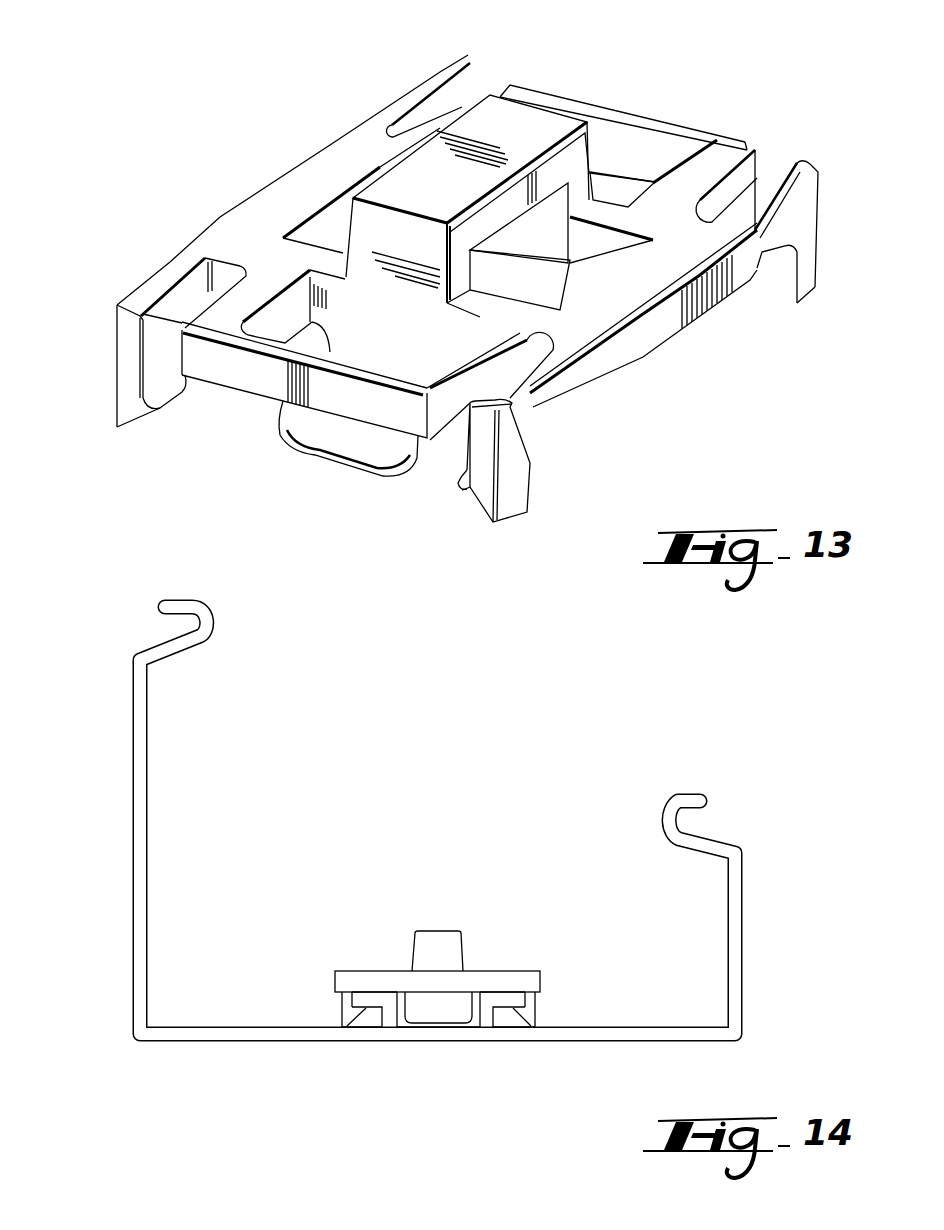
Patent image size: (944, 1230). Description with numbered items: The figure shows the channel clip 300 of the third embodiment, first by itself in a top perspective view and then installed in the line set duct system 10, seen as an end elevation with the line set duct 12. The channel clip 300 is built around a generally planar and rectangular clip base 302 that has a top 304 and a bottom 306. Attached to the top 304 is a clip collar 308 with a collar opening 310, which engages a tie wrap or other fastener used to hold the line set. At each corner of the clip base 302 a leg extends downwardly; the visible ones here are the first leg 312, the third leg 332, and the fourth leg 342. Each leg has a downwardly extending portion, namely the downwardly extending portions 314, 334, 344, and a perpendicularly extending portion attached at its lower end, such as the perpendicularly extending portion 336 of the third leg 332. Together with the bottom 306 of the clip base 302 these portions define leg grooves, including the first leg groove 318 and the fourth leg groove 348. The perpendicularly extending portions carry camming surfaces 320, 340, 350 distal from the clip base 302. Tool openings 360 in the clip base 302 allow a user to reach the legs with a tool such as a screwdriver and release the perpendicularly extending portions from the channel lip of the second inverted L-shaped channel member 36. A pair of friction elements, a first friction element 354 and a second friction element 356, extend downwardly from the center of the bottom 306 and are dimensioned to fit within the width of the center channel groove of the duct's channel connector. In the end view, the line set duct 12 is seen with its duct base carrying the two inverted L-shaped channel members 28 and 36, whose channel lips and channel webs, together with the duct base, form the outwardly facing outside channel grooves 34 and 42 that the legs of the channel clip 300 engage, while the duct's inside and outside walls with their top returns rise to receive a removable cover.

In FIG. 14, the line set duct system 10 is at (572, 740).
In FIG. 14, the line set duct 12 is at (148, 783).
In FIG. 14, the first inverted L-shaped channel member 28 is at (387, 1000).
In FIG. 14, the second inverted L-shaped channel member 36 is at (487, 1002).
In FIG. 14, the outside channel groove 34 is at (372, 1024).
In FIG. 14, the outside channel groove 42 is at (502, 1023).
In FIG. 13, the channel clip 300 is at (632, 47).
In FIG. 14, the channel clip 300 is at (345, 970).
In FIG. 13, the clip base 302 is at (333, 133).
In FIG. 14, the clip base 302 is at (337, 983).
In FIG. 13, the top 304 is at (302, 193).
In FIG. 13, the bottom 306 is at (673, 338).
In FIG. 13, the clip collar 308 is at (521, 122).
In FIG. 14, the clip collar 308 is at (435, 927).
In FIG. 13, the collar opening 310 is at (578, 200).
In FIG. 13, the first leg 312 is at (120, 425).
In FIG. 14, the first leg 312 is at (342, 1002).
In FIG. 13, the downwardly extending portion 314 is at (115, 378).
In FIG. 13, the first leg groove 318 is at (180, 390).
In FIG. 13, the camming surface 320 is at (147, 405).
In FIG. 14, the camming surface 320 is at (357, 1025).
In FIG. 13, the third leg 332 is at (817, 288).
In FIG. 13, the downwardly extending portion 334 is at (822, 205).
In FIG. 13, the perpendicularly extending portion 336 is at (793, 303).
In FIG. 13, the camming surface 340 is at (760, 280).
In FIG. 13, the fourth leg 342 is at (502, 512).
In FIG. 14, the fourth leg 342 is at (540, 1000).
In FIG. 13, the downwardly extending portion 344 is at (540, 480).
In FIG. 13, the fourth leg groove 348 is at (462, 470).
In FIG. 13, the camming surface 350 is at (468, 488).
In FIG. 14, the camming surface 350 is at (518, 1015).
In FIG. 13, the first friction element 354 is at (333, 457).
In FIG. 14, the first friction element 354 is at (438, 1013).
In FIG. 13, the second friction element 356 is at (530, 267).
In FIG. 13, the tool openings 360 is at (413, 130).